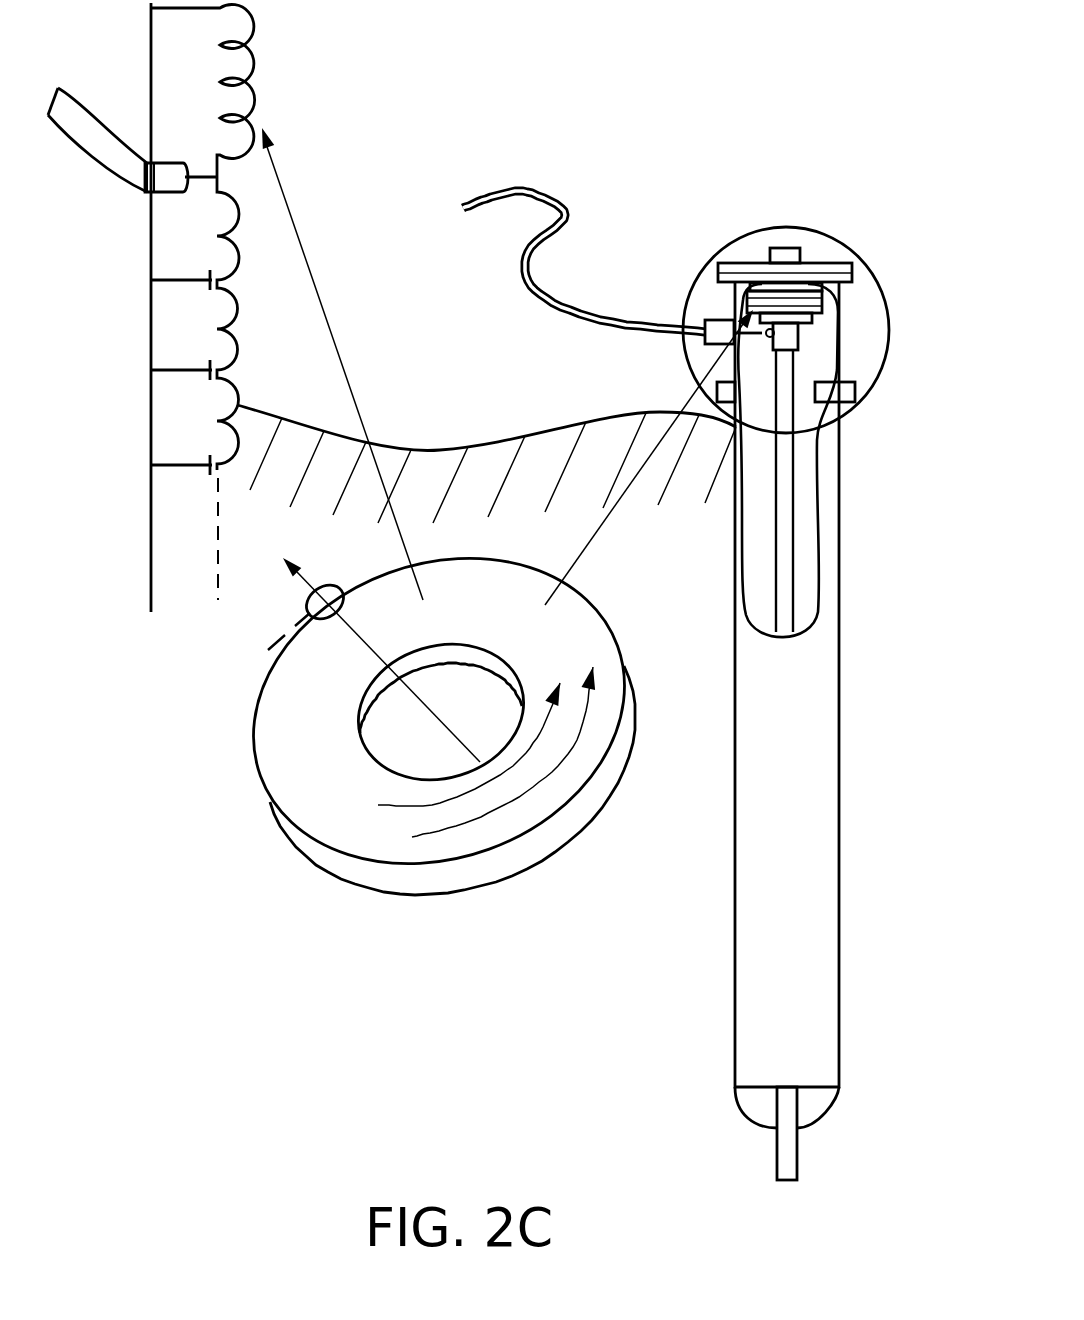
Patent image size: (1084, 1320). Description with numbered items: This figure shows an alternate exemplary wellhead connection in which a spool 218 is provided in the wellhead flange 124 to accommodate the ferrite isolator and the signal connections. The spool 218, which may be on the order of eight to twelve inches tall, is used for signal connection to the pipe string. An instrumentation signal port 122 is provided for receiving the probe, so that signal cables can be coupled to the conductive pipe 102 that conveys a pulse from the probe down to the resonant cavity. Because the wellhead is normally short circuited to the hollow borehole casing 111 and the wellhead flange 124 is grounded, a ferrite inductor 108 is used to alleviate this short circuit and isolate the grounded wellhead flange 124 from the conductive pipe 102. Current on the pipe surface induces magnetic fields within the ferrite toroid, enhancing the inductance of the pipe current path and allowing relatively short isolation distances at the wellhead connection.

The instrumentation signal port 122 is at (100, 178).
The wellhead flange 124 is at (833, 262).
The ferrite inductor 108 is at (823, 305).
The conductive pipe 102 is at (796, 496).
The hollow borehole casing 111 is at (841, 612).
The spool 218 is at (428, 895).